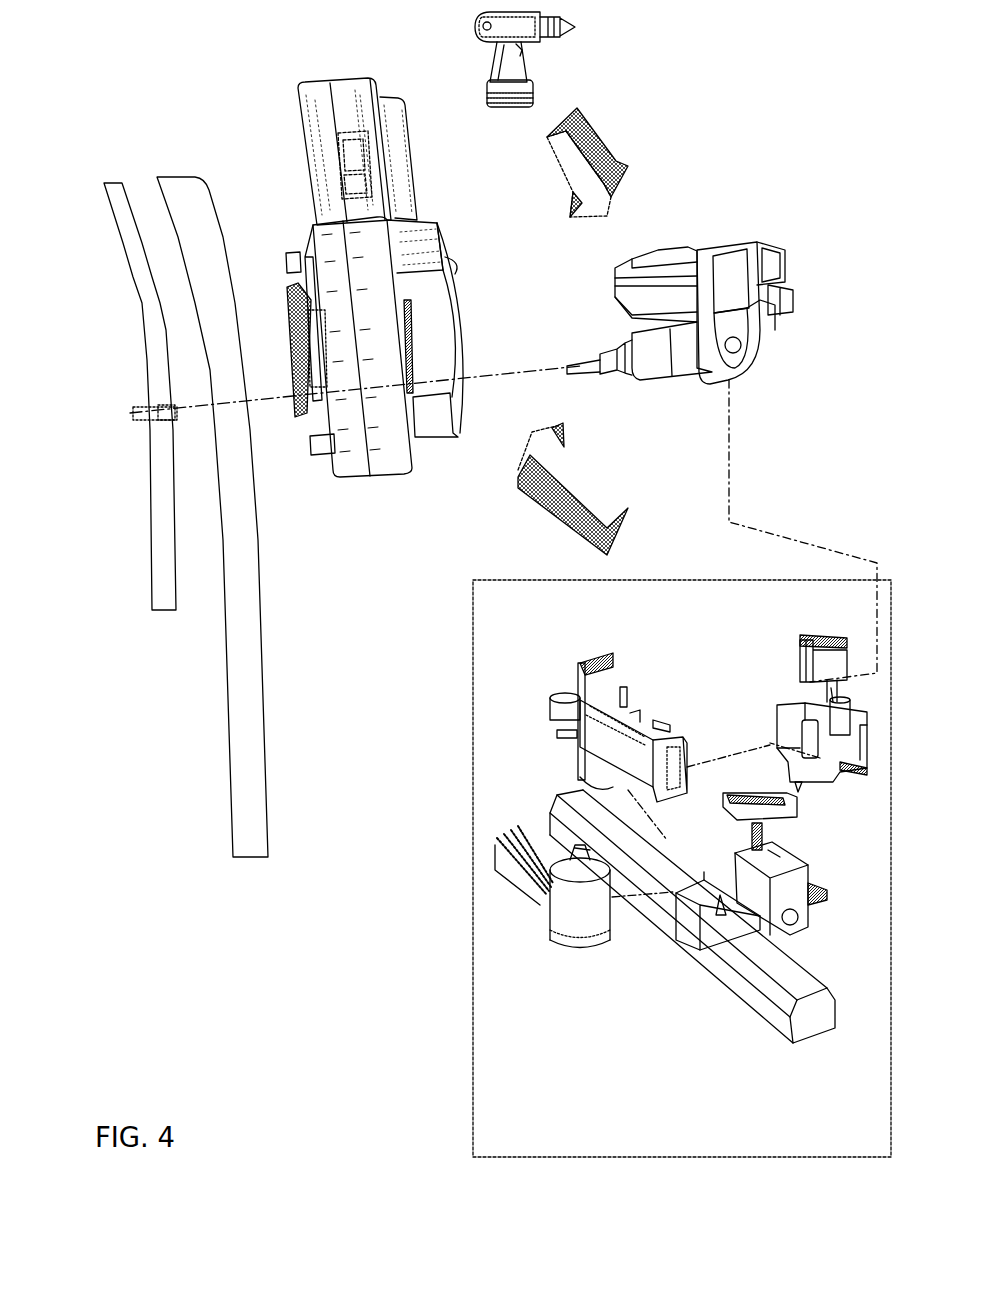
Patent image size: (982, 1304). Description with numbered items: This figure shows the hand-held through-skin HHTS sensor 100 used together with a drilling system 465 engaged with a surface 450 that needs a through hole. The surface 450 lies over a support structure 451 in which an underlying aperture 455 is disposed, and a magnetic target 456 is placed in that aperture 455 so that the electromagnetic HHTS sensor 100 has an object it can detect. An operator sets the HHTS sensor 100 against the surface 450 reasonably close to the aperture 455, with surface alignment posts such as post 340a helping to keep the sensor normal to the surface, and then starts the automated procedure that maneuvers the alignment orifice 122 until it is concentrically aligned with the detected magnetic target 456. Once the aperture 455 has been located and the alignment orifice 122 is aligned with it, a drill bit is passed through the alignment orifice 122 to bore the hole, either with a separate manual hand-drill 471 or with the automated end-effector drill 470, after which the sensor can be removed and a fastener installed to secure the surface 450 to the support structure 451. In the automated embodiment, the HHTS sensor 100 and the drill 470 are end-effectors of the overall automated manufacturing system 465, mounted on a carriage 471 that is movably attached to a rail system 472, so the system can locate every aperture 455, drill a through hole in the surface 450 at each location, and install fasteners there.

The HHTS sensor 100 is at (356, 502).
The alignment orifice 122 is at (424, 398).
The surface alignment post 340a is at (287, 240).
The surface 450 is at (247, 787).
The support structure 451 is at (164, 610).
The aperture 455 is at (160, 433).
The magnetic target 456 is at (120, 422).
The drilling system / automated manufacturing system 465 is at (458, 1052).
The automated end-effector drill 470 is at (695, 230).
The manual hand-drill / carriage 471 is at (594, 32).
The rail system 472 is at (755, 1022).